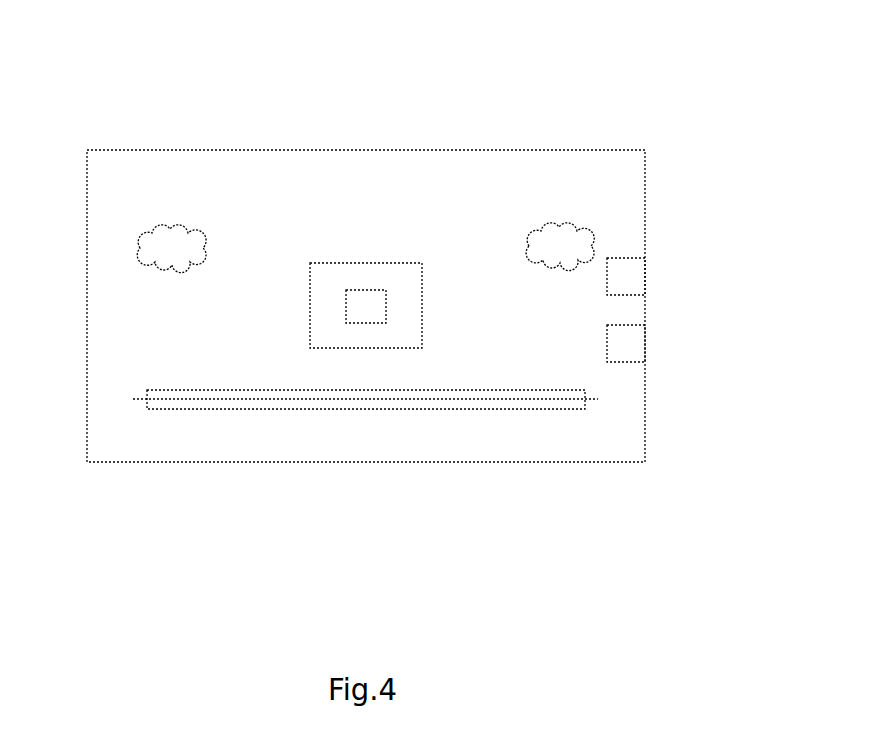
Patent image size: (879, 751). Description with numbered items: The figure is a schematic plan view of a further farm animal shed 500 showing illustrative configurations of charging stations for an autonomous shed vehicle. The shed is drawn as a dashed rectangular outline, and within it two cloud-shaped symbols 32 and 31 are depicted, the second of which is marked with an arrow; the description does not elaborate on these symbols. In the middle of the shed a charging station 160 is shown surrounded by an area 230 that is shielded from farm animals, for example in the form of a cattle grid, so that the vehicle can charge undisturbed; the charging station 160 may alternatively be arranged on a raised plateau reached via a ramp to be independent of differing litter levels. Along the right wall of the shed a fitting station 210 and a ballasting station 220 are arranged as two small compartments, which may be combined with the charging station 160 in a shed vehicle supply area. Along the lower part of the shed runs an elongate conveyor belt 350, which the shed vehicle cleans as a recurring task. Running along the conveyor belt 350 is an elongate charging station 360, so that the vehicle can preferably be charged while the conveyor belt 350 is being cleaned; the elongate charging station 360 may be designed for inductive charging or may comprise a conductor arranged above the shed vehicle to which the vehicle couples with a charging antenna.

The vehicle system 500 is at (644, 88).
The first wireless network 32 is at (158, 230).
The second wireless network 31 is at (549, 223).
The area shielded from farm animals 230 is at (320, 278).
The charging station 160 is at (360, 298).
The fitting station 210 is at (630, 278).
The ballasting station 220 is at (630, 346).
The conveyor belt 350 is at (312, 410).
The elongate charging station 360 is at (147, 399).